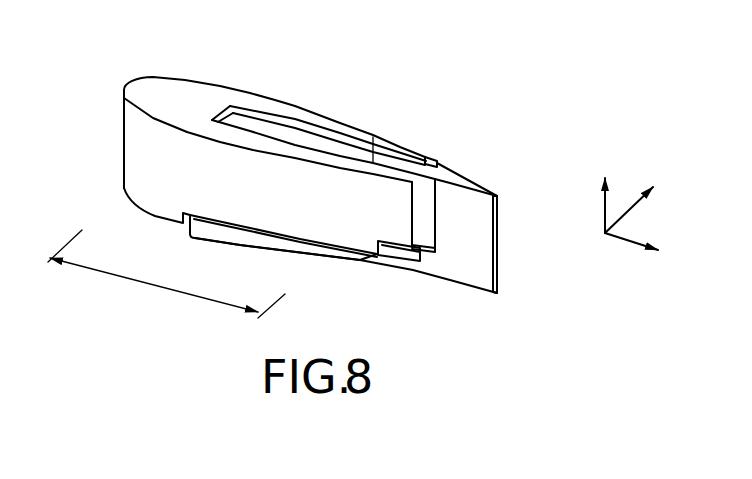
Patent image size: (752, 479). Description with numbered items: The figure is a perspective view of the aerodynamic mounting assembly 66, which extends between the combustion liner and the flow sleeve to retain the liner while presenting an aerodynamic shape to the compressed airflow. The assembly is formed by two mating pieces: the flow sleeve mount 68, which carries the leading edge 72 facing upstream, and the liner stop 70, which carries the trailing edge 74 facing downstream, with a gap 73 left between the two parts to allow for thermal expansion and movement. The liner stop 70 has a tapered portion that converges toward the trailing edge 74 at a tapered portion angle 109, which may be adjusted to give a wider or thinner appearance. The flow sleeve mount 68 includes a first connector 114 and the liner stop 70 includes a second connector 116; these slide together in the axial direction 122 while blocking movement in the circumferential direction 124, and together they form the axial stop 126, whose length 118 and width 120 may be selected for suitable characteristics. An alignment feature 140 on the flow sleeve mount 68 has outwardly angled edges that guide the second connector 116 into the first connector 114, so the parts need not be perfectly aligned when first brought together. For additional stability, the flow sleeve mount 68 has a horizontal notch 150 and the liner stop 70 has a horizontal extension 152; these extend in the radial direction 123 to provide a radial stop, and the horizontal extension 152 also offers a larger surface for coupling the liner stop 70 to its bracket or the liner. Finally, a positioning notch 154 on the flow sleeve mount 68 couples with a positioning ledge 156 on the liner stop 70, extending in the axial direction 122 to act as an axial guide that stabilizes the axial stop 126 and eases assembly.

The aerodynamic mounting assembly 66 is at (432, 89).
The flow sleeve mount 68 is at (165, 77).
The liner stop 70 is at (456, 285).
The leading edge 72 is at (116, 139).
The gap 73 is at (373, 182).
The trailing edge 74 is at (508, 261).
The tapered portion angle 109 is at (451, 172).
The first connector 114 is at (331, 129).
The second connector 116 is at (284, 128).
The length 118 is at (155, 286).
The width 120 is at (173, 136).
The axial direction 122 is at (623, 244).
The radial direction 123 is at (602, 218).
The circumferential direction 124 is at (627, 216).
The axial stop 126 is at (266, 97).
The alignment feature 140 is at (446, 161).
The horizontal notch 150 is at (268, 233).
The horizontal extension 152 is at (290, 248).
The positioning notch 154 is at (359, 261).
The positioning ledge 156 is at (410, 263).